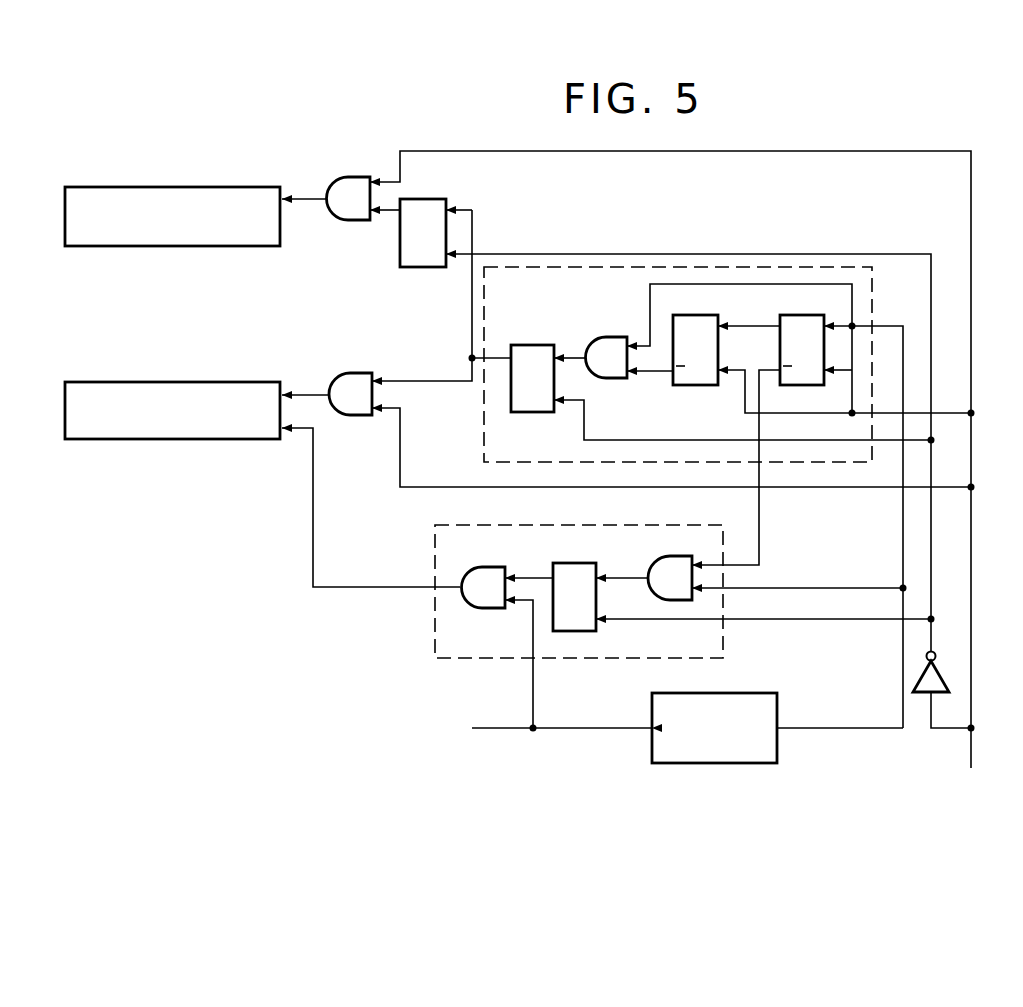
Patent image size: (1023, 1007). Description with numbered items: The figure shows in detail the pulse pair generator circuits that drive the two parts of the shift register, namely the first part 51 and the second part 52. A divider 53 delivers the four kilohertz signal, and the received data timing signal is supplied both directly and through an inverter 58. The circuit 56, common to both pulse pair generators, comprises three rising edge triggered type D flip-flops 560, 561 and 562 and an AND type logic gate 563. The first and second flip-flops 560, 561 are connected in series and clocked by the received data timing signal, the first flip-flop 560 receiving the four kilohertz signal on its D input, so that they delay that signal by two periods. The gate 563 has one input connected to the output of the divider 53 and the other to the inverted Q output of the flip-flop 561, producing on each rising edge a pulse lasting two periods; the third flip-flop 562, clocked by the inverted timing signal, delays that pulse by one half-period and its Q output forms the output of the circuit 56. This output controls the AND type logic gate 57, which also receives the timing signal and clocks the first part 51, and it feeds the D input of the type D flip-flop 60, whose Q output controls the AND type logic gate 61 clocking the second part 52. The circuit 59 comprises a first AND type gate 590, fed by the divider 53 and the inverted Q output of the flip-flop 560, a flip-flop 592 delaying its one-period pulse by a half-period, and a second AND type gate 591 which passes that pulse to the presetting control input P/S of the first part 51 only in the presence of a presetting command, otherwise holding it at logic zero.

The first part of the shift register 51 is at (185, 382).
The second part of the shift register 52 is at (183, 187).
The divider 53 is at (734, 703).
The circuit 56 is at (872, 311).
The AND type logic gate 57 is at (339, 391).
The inverter 58 is at (940, 678).
The circuit 59 is at (435, 552).
The type D flip-flop 60 is at (418, 202).
The AND type logic gate 61 is at (345, 186).
The first flip-flop 560 is at (783, 324).
The second flip-flop 561 is at (690, 326).
The third flip-flop 562 is at (533, 345).
The AND type logic gate 563 is at (604, 343).
The first AND type gate 590 is at (663, 566).
The second AND type gate 591 is at (490, 571).
The flip-flop 592 is at (567, 564).